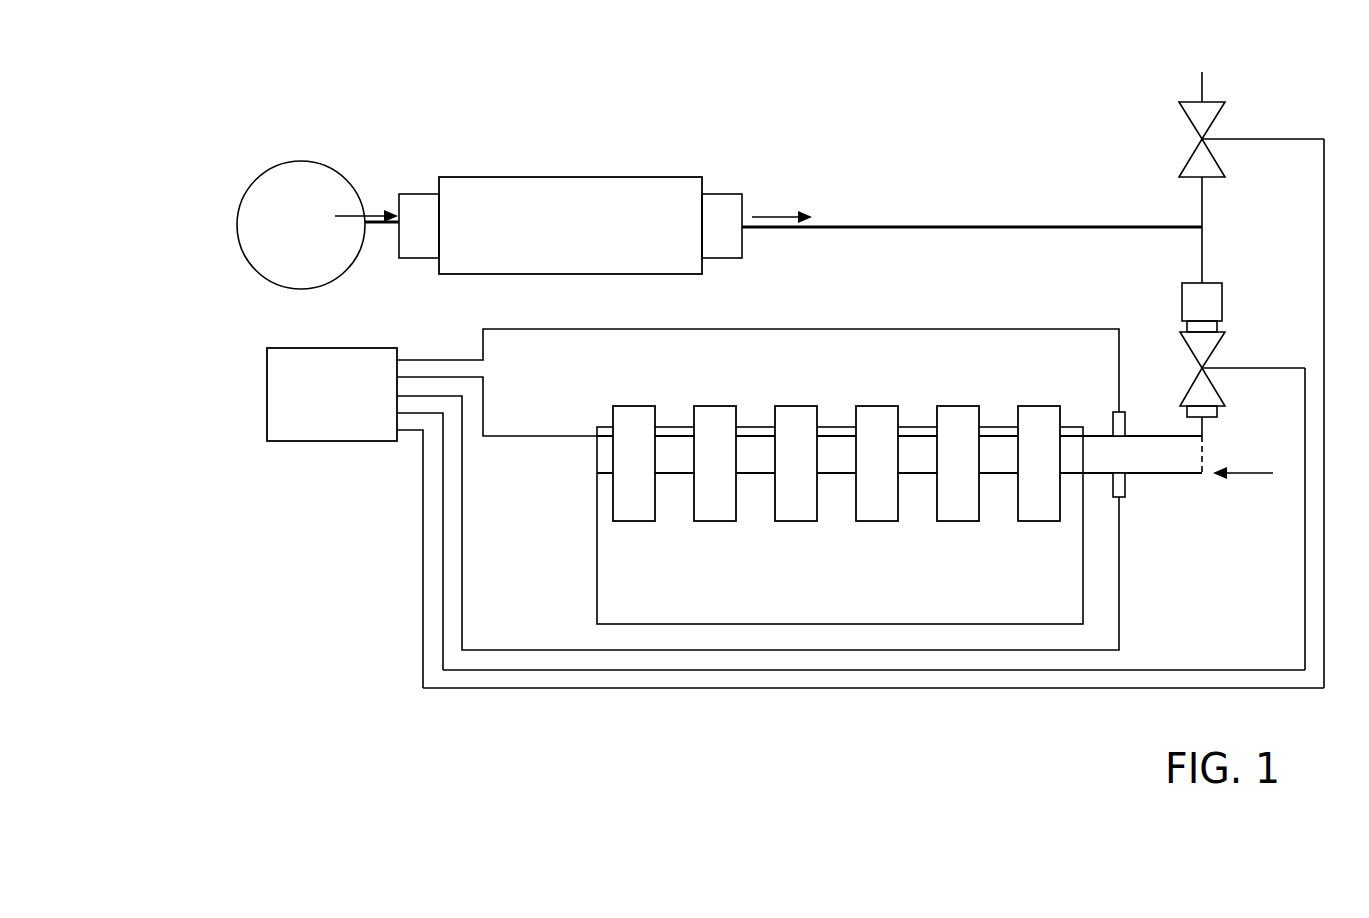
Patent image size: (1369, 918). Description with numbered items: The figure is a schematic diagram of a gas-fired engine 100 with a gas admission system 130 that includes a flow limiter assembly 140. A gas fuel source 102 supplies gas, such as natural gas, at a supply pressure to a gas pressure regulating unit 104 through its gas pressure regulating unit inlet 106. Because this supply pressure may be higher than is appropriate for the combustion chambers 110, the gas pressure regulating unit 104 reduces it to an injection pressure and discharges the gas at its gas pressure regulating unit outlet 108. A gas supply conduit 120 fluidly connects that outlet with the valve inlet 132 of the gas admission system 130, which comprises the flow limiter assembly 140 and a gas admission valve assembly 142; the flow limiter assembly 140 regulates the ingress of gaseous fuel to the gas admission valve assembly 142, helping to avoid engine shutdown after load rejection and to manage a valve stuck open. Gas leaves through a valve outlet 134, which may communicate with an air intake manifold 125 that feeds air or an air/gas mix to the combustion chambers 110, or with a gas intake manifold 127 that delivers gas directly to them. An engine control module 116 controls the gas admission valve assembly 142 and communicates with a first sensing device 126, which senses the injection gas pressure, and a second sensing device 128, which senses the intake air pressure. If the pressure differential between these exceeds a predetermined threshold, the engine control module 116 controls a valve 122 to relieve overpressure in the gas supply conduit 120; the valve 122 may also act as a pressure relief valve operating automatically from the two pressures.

The gas-fired engine 100 is at (998, 62).
The gas fuel source 102 is at (301, 161).
The gas pressure regulating unit 104 is at (570, 177).
The gas pressure regulating unit inlet 106 is at (420, 194).
The gas pressure regulating unit outlet 108 is at (722, 194).
The combustion chambers 110 is at (633, 521).
The engine control module 116 is at (332, 348).
The gas supply conduit 120 is at (972, 227).
The valve 122 is at (1210, 147).
The air intake manifold 125 is at (1182, 475).
The first sensing device 126 is at (1127, 423).
The gas intake manifold 127 is at (1173, 435).
The second sensing device 128 is at (1127, 485).
The gas admission system 130 is at (1252, 232).
The valve inlet 132 is at (1220, 330).
The valve outlet 134 is at (1218, 412).
The flow limiter assembly 140 is at (1223, 292).
The gas admission valve assembly 142 is at (1215, 378).